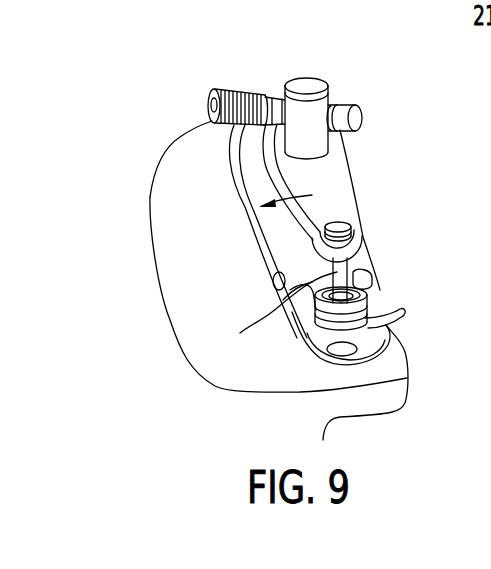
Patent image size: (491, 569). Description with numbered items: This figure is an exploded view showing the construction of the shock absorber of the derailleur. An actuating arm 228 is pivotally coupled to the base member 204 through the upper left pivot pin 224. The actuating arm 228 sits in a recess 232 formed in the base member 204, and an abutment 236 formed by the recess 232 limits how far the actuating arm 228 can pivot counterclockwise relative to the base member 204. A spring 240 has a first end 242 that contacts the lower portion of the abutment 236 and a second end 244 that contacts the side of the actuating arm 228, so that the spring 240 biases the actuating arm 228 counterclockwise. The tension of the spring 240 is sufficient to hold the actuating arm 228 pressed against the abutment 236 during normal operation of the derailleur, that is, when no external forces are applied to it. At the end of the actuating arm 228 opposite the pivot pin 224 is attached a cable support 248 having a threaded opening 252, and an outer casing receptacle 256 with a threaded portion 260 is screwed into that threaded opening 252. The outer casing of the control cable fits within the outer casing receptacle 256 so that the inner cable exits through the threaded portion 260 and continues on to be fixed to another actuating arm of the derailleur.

The base member 204 is at (173, 243).
The upper left pivot pin 224 is at (340, 225).
The actuating arm 228 is at (336, 173).
The recess 232 is at (290, 308).
The abutment 236 is at (270, 295).
The spring 240 is at (376, 304).
The first end 242 is at (393, 313).
The second end 244 is at (374, 275).
The cable support 248 is at (307, 81).
The threaded opening 252 is at (331, 105).
The outer casing receptacle 256 is at (227, 130).
The threaded portion 260 is at (355, 106).